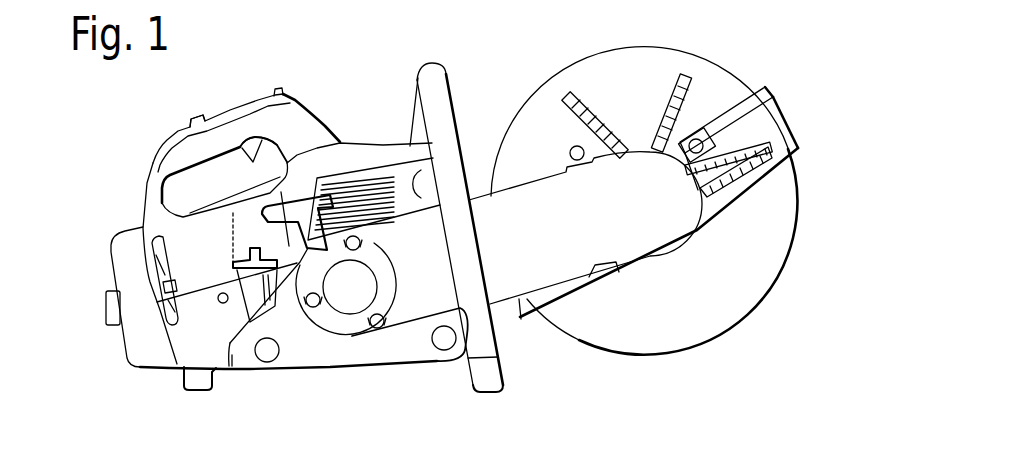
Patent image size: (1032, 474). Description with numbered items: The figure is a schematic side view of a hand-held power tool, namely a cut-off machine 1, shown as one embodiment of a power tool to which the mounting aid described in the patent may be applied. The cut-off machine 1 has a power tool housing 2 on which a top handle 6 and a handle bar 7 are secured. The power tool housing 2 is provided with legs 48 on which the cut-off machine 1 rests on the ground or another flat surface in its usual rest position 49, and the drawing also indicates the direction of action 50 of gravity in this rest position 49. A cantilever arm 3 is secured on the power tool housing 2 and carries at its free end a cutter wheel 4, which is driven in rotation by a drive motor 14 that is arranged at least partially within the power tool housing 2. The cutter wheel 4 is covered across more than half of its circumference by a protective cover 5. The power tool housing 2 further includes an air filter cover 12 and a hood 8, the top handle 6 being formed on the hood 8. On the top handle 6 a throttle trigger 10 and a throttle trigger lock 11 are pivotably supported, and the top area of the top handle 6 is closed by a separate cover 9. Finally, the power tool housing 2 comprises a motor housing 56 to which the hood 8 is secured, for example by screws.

The cut-off machine 1 is at (784, 54).
The power tool housing 2 is at (182, 348).
The cutting arm 3 is at (568, 268).
The cutter wheel 4 is at (743, 297).
The protective cover 5 is at (637, 63).
The top handle 6 is at (187, 158).
The handle bar 7 is at (440, 104).
The hood 8 is at (157, 225).
The cover 9 is at (274, 95).
The throttle trigger 10 is at (252, 152).
The throttle trigger lock 11 is at (200, 117).
The air filter cover 12 is at (148, 328).
The drive motor 14 is at (365, 187).
The legs 48 is at (200, 385).
The rest position 49 is at (696, 396).
The direction of action of gravity 50 is at (836, 160).
The motor housing 56 is at (233, 344).